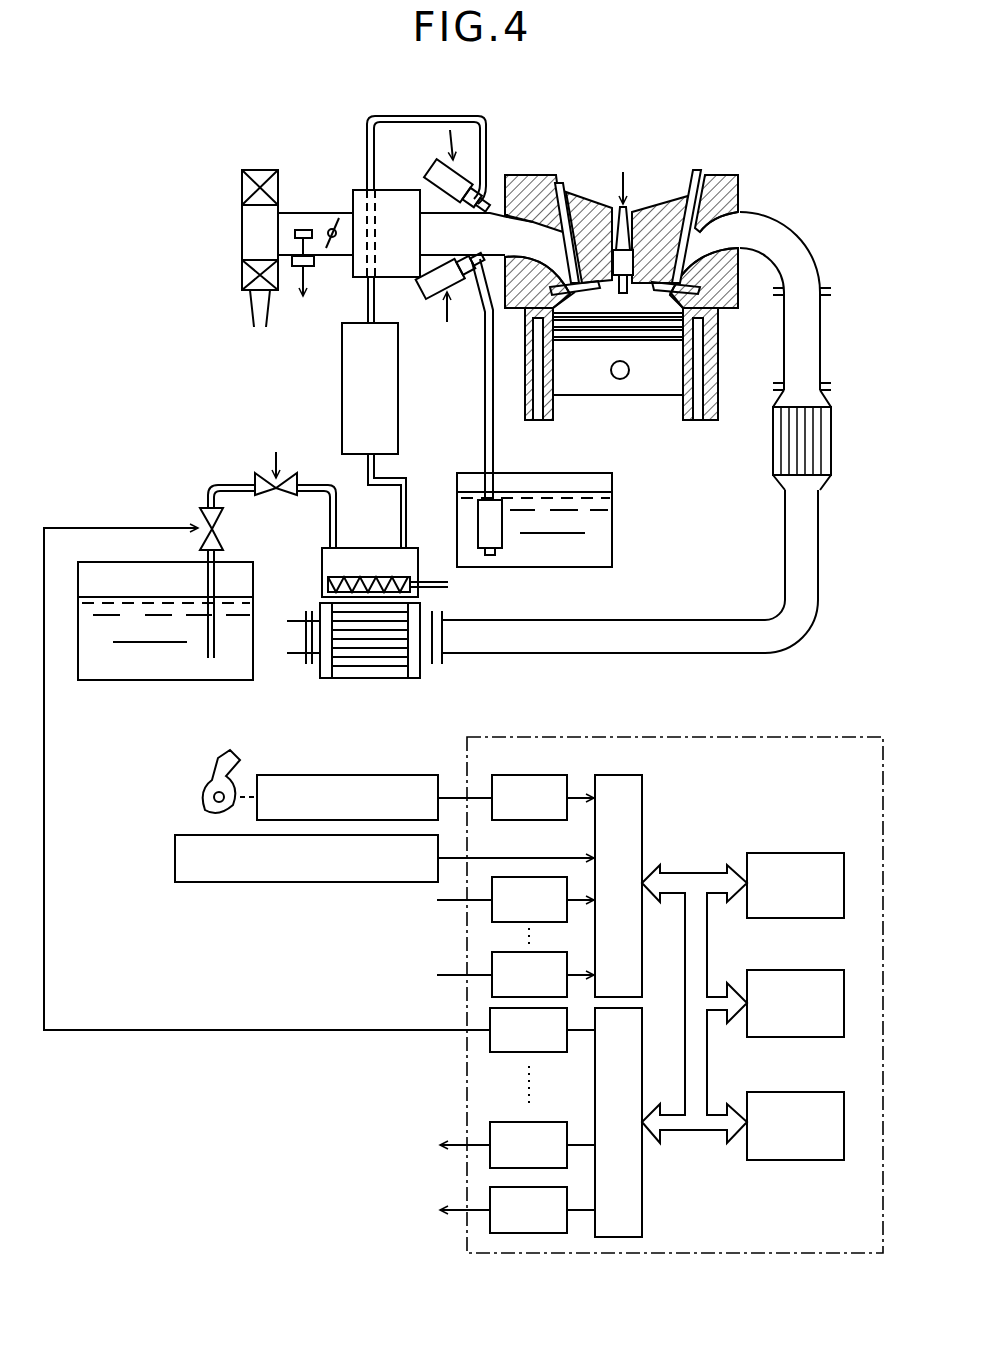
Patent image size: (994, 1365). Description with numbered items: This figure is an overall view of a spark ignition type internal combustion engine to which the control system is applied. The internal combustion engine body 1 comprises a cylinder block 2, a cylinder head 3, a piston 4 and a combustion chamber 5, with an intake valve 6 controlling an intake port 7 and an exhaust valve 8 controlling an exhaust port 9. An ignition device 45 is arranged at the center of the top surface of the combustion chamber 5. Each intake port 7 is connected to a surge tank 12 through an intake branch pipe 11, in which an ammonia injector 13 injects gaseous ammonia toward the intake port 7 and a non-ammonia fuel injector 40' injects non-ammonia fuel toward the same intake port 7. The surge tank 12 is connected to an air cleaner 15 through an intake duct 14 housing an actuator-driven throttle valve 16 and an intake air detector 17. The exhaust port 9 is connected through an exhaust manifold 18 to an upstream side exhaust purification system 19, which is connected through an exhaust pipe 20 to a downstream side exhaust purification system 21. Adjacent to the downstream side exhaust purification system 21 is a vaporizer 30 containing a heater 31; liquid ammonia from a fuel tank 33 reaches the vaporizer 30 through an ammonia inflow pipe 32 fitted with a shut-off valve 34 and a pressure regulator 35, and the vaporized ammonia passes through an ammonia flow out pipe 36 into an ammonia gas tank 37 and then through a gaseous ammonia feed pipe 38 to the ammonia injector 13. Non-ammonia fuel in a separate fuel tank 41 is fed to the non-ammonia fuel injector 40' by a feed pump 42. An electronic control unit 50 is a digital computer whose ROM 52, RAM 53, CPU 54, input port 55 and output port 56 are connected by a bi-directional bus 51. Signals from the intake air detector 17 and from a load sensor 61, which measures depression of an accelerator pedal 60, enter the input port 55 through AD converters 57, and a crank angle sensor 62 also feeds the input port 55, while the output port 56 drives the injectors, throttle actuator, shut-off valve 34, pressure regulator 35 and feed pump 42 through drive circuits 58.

The internal combustion engine body 1 is at (651, 279).
The cylinder block 2 is at (713, 373).
The cylinder head 3 is at (738, 193).
The piston 4 is at (585, 383).
The combustion chamber 5 is at (652, 307).
The intake valve 6 is at (578, 200).
The intake port 7 is at (535, 208).
The exhaust valve 8 is at (681, 178).
The exhaust port 9 is at (708, 220).
The intake branch pipe 11 is at (428, 262).
The surge tank 12 is at (402, 277).
The ammonia injector 13 is at (434, 168).
The intake duct 14 is at (337, 258).
The air cleaner 15 is at (242, 282).
The throttle valve 16 is at (337, 226).
The intake air detector 17 is at (303, 228).
The exhaust manifold 18 is at (803, 231).
The upstream side exhaust purification system 19 is at (832, 441).
The exhaust pipe 20 is at (818, 576).
The downstream side exhaust purification system 21 is at (387, 658).
The vaporizer 30 is at (322, 565).
The heater 31 is at (404, 577).
The ammonia inflow pipe 32 is at (313, 482).
The fuel tank 33 is at (134, 672).
The shut-off valve 34 is at (214, 541).
The pressure regulator 35 is at (283, 496).
The ammonia flow out pipe 36 is at (406, 517).
The ammonia gas tank 37 is at (399, 405).
The gaseous ammonia feed pipe 38 is at (372, 114).
The non-ammonia fuel injector 40' is at (469, 379).
The fuel tank 41 is at (545, 560).
The feed pump 42 is at (497, 513).
The ignition device 45 is at (624, 240).
The electronic control unit 50 is at (842, 735).
The bi-directional bus 51 is at (690, 880).
The ROM 52 is at (805, 853).
The RAM 53 is at (800, 970).
The CPU 54 is at (800, 1092).
The input port 55 is at (645, 798).
The output port 56 is at (642, 1212).
The AD converter 57 is at (530, 775).
The drive circuit 58 is at (490, 1130).
The accelerator pedal 60 is at (200, 785).
The load sensor 61 is at (299, 775).
The crank angle sensor 62 is at (197, 882).